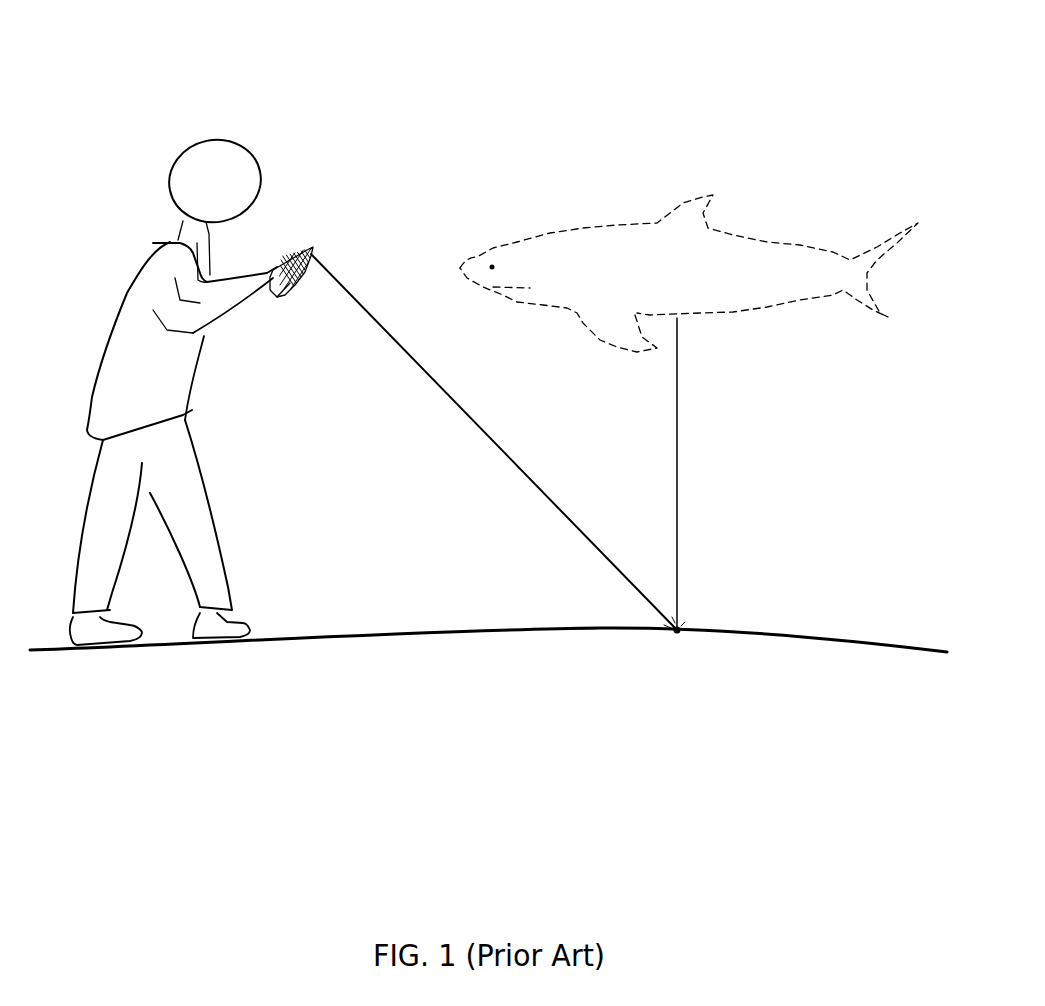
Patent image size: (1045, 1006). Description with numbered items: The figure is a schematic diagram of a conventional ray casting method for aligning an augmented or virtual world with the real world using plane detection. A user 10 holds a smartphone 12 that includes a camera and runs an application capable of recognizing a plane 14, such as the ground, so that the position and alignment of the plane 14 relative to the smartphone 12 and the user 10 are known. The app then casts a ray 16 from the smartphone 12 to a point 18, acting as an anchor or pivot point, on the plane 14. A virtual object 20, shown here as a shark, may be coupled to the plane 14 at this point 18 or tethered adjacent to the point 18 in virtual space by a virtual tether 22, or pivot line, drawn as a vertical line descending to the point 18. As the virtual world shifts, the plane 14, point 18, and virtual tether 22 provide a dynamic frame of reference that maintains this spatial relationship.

The user 10 is at (263, 135).
The smartphone 12 is at (314, 242).
The plane 14 is at (823, 625).
The ray 16 is at (560, 492).
The point 18 is at (692, 613).
The virtual object 20 is at (790, 225).
The virtual tether 22 is at (690, 466).